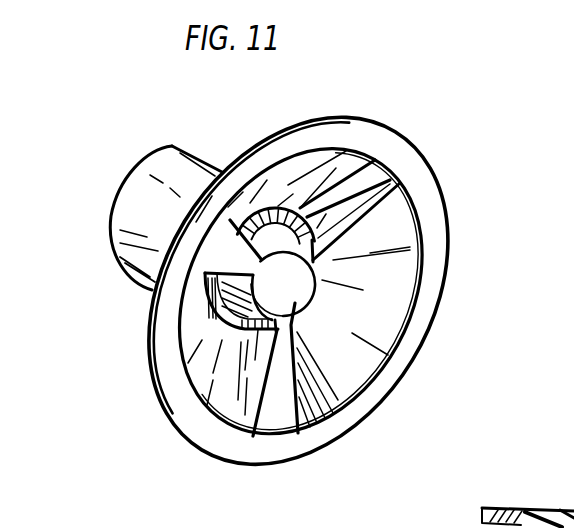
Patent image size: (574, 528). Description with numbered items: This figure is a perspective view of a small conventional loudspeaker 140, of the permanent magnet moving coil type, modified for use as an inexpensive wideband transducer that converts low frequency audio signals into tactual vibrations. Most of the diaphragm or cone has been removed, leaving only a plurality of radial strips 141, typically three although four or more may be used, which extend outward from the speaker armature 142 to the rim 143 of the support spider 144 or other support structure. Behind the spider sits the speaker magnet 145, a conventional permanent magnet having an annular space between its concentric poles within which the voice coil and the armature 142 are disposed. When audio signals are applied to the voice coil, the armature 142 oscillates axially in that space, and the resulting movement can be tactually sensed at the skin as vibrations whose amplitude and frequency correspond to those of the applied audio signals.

The loudspeaker 140 is at (462, 148).
The radial strips 141 is at (205, 262).
The speaker armature 142 is at (287, 291).
The rim 143 is at (390, 375).
The support spider 144 is at (381, 303).
The speaker magnet 145 is at (128, 213).